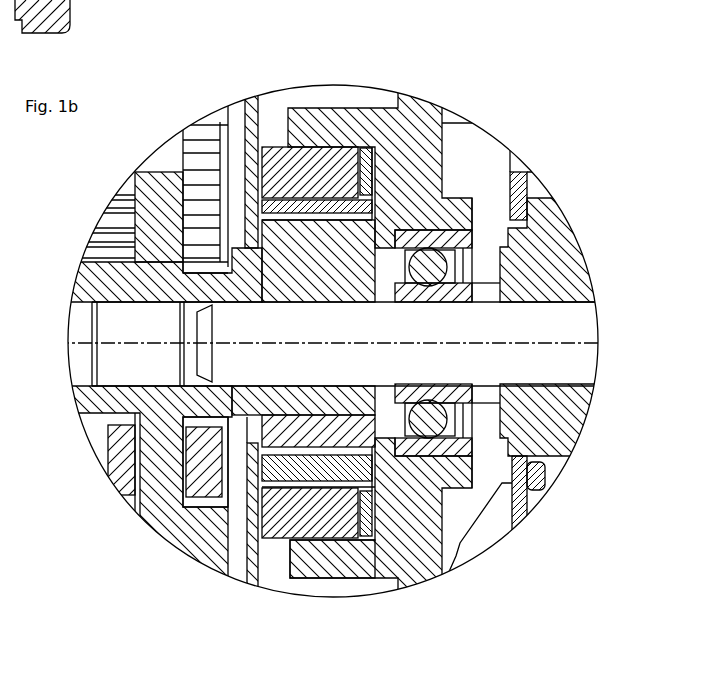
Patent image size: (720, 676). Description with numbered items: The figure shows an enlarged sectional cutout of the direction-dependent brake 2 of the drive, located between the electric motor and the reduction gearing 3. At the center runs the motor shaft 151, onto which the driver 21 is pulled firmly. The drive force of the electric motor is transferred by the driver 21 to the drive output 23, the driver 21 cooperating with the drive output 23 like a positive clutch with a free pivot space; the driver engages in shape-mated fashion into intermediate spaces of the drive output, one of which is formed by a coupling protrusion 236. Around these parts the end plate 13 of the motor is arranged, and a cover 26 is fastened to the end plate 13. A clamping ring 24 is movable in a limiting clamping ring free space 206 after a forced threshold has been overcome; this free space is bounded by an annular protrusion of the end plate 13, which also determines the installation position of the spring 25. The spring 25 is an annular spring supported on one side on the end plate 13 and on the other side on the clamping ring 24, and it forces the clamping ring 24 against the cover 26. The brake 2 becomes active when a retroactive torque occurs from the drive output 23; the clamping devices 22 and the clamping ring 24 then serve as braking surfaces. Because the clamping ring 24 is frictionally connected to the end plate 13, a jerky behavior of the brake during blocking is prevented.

The direction-dependent brake 2 is at (364, 74).
The reduction gearing 3 is at (182, 122).
The end plate 13 is at (414, 152).
The driver 21 is at (255, 200).
The clamping devices 22 is at (305, 203).
The drive output 23 is at (245, 418).
The clamping ring 24 is at (322, 175).
The spring 25 is at (421, 160).
The cover 26 is at (252, 565).
The motor shaft 151 is at (558, 362).
The clamping ring free space 206 is at (346, 541).
The coupling protrusion 236 is at (470, 541).